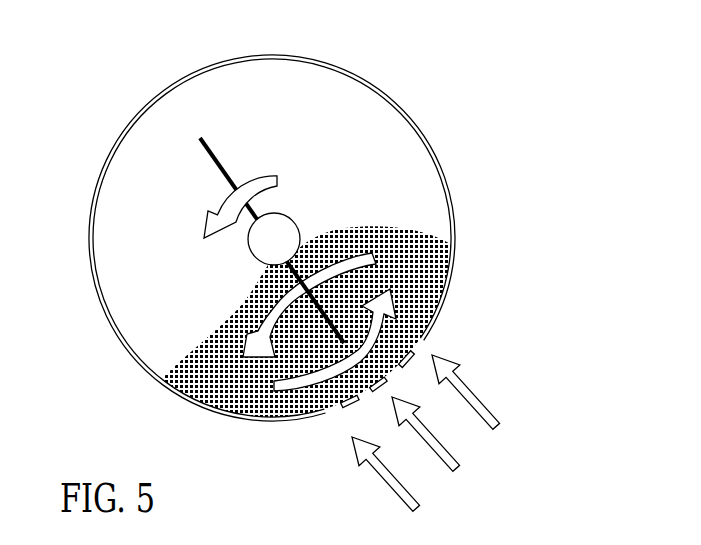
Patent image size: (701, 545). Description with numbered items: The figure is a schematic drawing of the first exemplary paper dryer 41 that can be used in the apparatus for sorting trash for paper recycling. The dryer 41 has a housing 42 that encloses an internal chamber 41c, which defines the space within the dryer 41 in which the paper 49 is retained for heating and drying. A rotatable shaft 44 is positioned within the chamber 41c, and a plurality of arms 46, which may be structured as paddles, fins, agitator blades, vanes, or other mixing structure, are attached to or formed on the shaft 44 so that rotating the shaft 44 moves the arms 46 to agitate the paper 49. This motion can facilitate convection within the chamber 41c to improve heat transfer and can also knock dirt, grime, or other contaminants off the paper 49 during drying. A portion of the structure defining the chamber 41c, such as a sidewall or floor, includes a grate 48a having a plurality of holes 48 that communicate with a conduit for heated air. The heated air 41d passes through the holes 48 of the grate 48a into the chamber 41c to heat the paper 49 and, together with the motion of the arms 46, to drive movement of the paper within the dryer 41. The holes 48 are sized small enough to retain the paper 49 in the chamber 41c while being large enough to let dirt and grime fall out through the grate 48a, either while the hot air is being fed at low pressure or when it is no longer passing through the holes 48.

The dryer 41 is at (421, 110).
The internal chamber 41c is at (355, 107).
The heated air 41d is at (487, 400).
The housing 42 is at (463, 241).
The rotatable shaft 44 is at (294, 222).
The arms 46 is at (202, 155).
The holes 48 is at (362, 397).
The grate 48a is at (337, 415).
The paper 49 is at (218, 337).